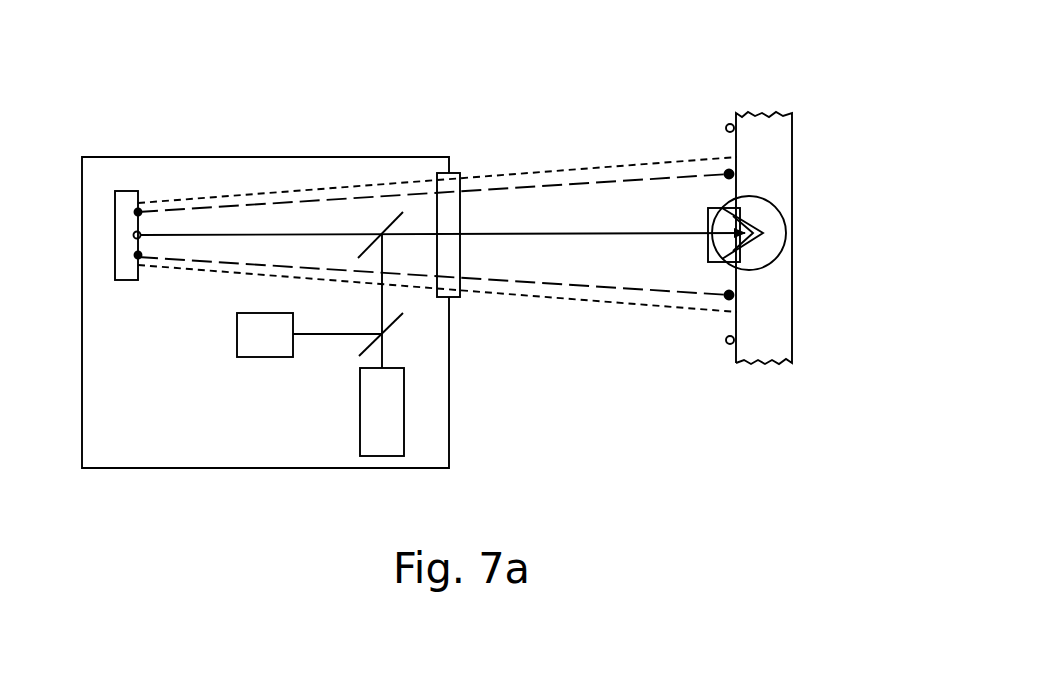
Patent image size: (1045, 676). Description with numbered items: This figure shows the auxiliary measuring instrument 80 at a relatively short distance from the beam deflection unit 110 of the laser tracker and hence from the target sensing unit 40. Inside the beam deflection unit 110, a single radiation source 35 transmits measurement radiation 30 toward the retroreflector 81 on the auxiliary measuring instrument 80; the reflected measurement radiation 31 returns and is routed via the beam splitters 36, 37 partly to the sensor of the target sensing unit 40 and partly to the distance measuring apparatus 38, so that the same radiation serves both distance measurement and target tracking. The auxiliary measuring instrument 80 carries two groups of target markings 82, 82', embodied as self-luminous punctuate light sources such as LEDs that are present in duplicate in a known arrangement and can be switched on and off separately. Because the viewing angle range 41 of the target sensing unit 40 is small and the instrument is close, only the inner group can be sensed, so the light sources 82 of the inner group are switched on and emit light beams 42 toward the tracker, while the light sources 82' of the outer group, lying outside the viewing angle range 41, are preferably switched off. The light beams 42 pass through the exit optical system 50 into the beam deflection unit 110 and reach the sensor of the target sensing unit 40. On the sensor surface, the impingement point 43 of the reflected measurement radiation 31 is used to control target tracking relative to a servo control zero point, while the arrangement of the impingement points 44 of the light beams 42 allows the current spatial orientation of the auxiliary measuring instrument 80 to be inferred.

The beam deflection unit 110 is at (183, 138).
The target sensing unit 40 is at (127, 268).
The impingement point 43 is at (139, 233).
The impingement points 44 is at (139, 254).
The exit optical system 50 is at (443, 185).
The beam splitter 37 is at (372, 240).
The measurement radiation 30 is at (382, 348).
The reflected measurement radiation 31 is at (242, 235).
The distance measuring apparatus 38 is at (255, 346).
The beam splitter 36 is at (390, 329).
The radiation source 35 is at (368, 428).
The viewing angle range 41 is at (643, 163).
The light beams 42 is at (640, 290).
The auxiliary measuring instrument 80 is at (745, 385).
The retroreflector 81 is at (745, 212).
The target markings 82 is at (681, 204).
The target markings 82' is at (677, 220).